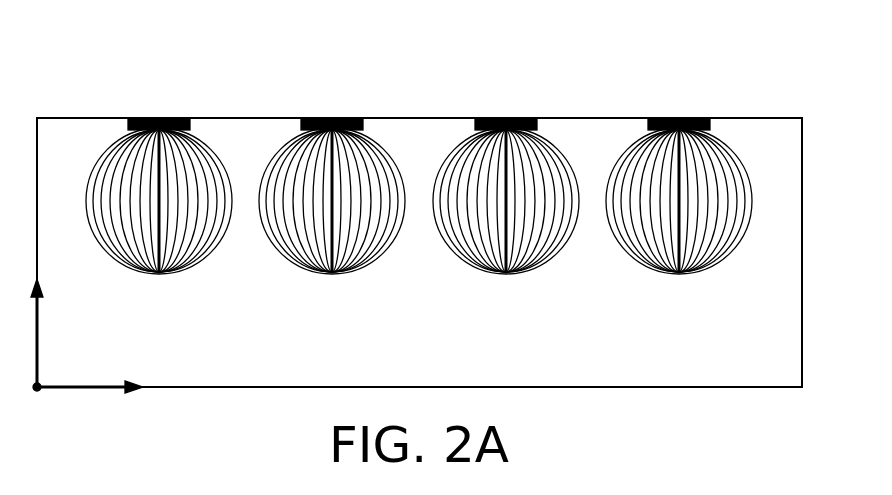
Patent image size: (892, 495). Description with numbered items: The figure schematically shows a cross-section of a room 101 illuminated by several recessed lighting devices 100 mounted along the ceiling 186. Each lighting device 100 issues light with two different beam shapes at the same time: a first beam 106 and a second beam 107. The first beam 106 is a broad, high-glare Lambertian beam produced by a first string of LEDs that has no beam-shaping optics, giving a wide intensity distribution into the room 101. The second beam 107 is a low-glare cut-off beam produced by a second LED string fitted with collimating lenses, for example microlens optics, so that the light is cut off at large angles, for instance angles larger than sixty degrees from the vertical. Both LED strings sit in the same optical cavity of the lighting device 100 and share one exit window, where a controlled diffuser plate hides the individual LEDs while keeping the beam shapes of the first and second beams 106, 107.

The lighting device 100 is at (170, 118).
The room 101 is at (399, 352).
The first beam 106 is at (110, 150).
The second beam 107 is at (188, 155).
The ceiling 186 is at (109, 118).